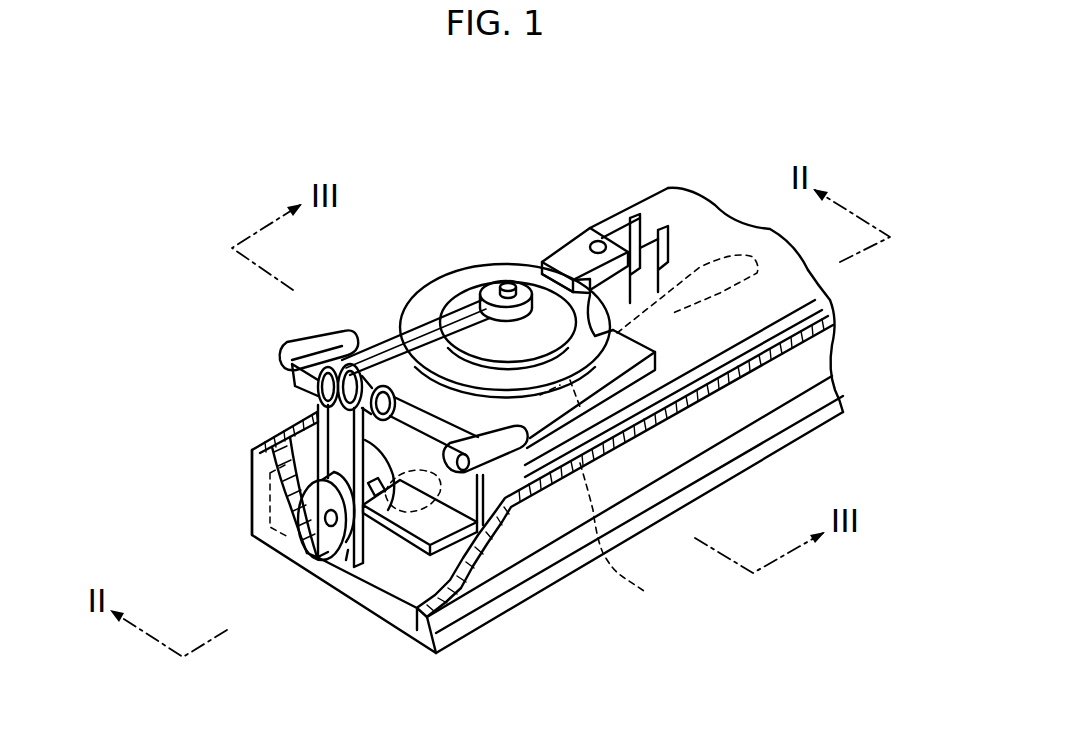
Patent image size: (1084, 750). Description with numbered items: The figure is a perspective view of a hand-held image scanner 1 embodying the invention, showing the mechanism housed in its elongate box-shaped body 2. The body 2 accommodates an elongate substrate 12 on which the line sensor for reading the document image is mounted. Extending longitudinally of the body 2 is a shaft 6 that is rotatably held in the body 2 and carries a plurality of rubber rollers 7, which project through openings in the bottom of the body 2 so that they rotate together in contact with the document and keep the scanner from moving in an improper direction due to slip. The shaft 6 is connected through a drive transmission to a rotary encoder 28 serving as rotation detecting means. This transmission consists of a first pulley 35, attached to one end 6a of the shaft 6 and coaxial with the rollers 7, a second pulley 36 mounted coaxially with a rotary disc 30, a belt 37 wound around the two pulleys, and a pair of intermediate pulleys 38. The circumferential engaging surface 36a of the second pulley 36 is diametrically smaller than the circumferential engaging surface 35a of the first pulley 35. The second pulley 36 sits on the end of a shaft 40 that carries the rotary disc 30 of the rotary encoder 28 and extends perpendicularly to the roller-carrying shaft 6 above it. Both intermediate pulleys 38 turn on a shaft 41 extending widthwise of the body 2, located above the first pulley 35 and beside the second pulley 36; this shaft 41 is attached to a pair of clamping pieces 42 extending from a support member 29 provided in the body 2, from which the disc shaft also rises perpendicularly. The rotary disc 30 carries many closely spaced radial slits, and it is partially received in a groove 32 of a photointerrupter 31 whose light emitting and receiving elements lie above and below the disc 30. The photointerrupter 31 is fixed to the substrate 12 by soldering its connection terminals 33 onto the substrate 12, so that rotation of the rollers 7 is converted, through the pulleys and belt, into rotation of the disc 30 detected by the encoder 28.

The hand-held image scanner 1 is at (219, 484).
The body 2 is at (257, 545).
The shaft 6 is at (388, 472).
The one end of the shaft 6a is at (327, 519).
The rollers 7 is at (622, 544).
The substrate 12 is at (672, 210).
The rotary encoder 28 is at (598, 207).
The support member 29 is at (653, 397).
The rotary disc 30 is at (443, 280).
The photointerrupter 31 is at (560, 243).
The groove 32 is at (599, 294).
The connection terminals 33 is at (622, 215).
The first pulley 35 is at (333, 545).
The circumferential engaging surface 35a is at (313, 425).
The second pulley 36 is at (487, 281).
The circumferential engaging surface 36a is at (461, 290).
The belt 37 is at (379, 386).
The intermediate pulleys 38 is at (340, 364).
The shaft 40 is at (509, 279).
The shaft 41 is at (313, 387).
The clamping pieces 42 is at (305, 347).